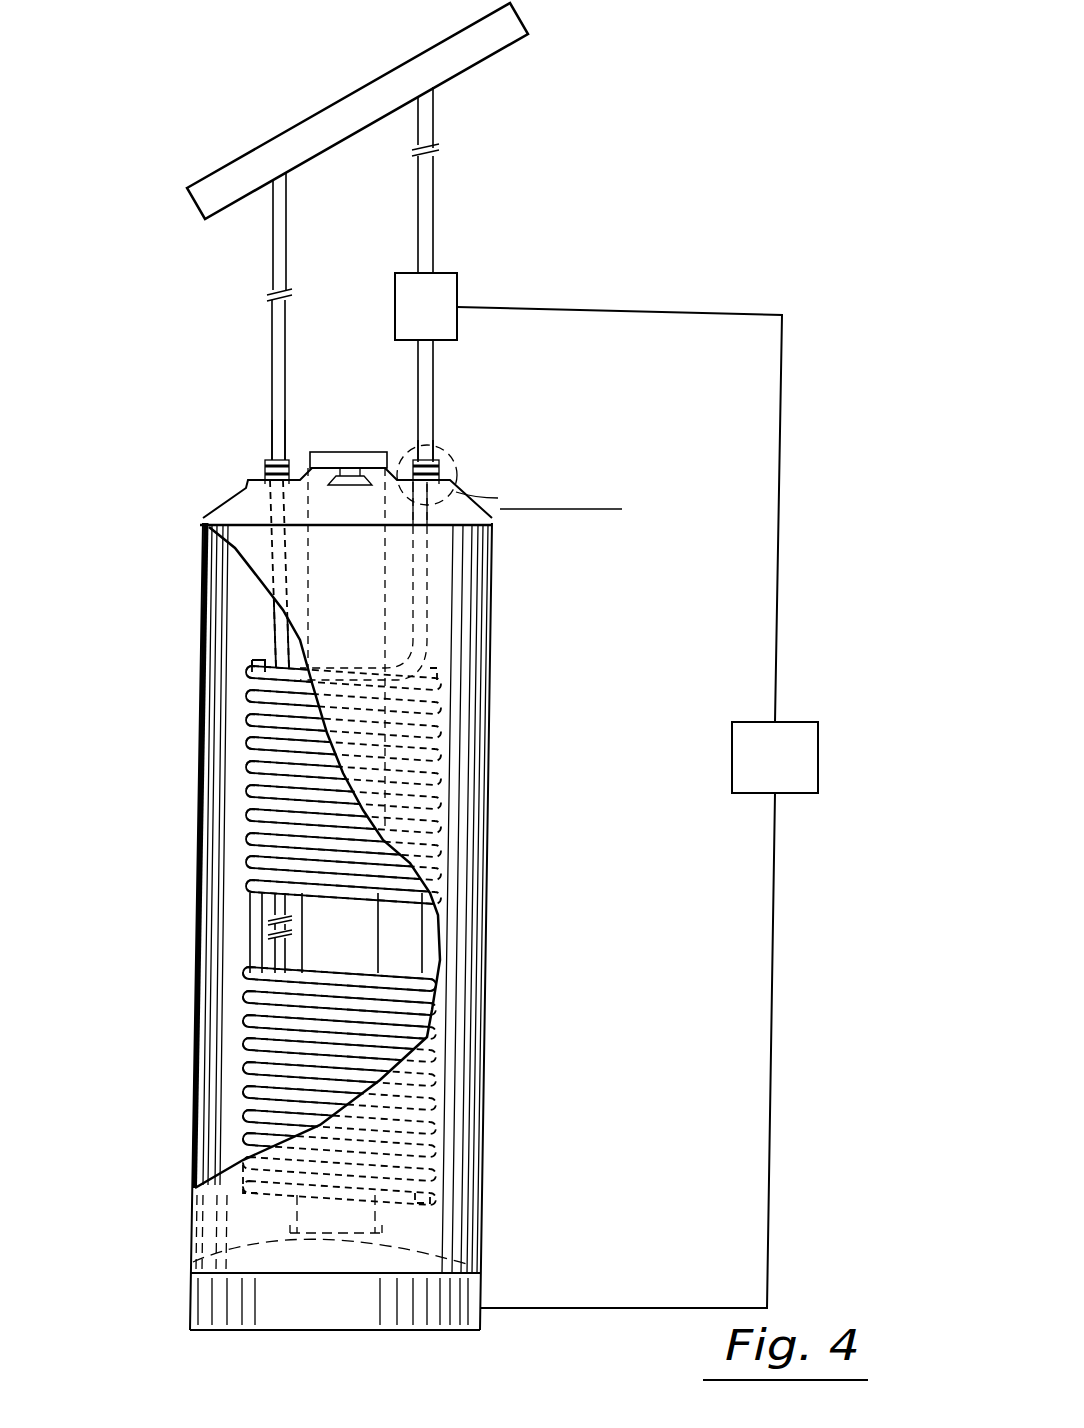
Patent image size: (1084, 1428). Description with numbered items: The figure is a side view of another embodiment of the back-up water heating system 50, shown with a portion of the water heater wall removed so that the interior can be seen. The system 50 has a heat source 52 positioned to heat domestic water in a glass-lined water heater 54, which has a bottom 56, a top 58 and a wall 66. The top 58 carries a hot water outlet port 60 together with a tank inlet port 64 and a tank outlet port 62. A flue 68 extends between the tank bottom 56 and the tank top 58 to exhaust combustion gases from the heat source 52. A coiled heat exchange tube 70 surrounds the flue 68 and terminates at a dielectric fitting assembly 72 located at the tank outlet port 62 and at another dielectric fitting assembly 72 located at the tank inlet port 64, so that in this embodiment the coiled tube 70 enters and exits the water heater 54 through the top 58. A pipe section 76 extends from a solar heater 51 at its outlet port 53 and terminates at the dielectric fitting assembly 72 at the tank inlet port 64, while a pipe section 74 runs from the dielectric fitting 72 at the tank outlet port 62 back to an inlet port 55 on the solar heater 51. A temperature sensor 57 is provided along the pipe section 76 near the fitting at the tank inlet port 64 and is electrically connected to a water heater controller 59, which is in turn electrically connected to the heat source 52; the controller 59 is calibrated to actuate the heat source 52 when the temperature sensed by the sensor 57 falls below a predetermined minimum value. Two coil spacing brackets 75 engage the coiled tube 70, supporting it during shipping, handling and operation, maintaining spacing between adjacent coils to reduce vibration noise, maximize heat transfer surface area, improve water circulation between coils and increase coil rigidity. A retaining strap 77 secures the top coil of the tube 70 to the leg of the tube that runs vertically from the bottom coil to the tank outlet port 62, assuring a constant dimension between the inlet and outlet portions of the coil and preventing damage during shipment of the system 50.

The back-up water heating system 50 is at (178, 1074).
The solar heater 51 is at (343, 80).
The heat source 52 is at (182, 1294).
The outlet port 53 is at (437, 90).
The glass-lined water heater 54 is at (496, 866).
The inlet port 55 is at (270, 182).
The bottom 56 is at (215, 1242).
The temperature sensor 57 is at (452, 275).
The top 58 is at (208, 506).
The water heater controller 59 is at (795, 722).
The hot water outlet port 60 is at (348, 476).
The tank outlet port 62 is at (265, 471).
The tank inlet port 64 is at (446, 477).
The wall 66 is at (227, 850).
The flue 68 is at (300, 947).
The coiled heat exchange tube 70 is at (250, 887).
The dielectric fitting assembly 72 is at (266, 460).
The pipe section 74 is at (273, 420).
The coil spacing brackets 75 is at (272, 930).
The pipe section 76 is at (433, 440).
The retaining strap 77 is at (255, 672).